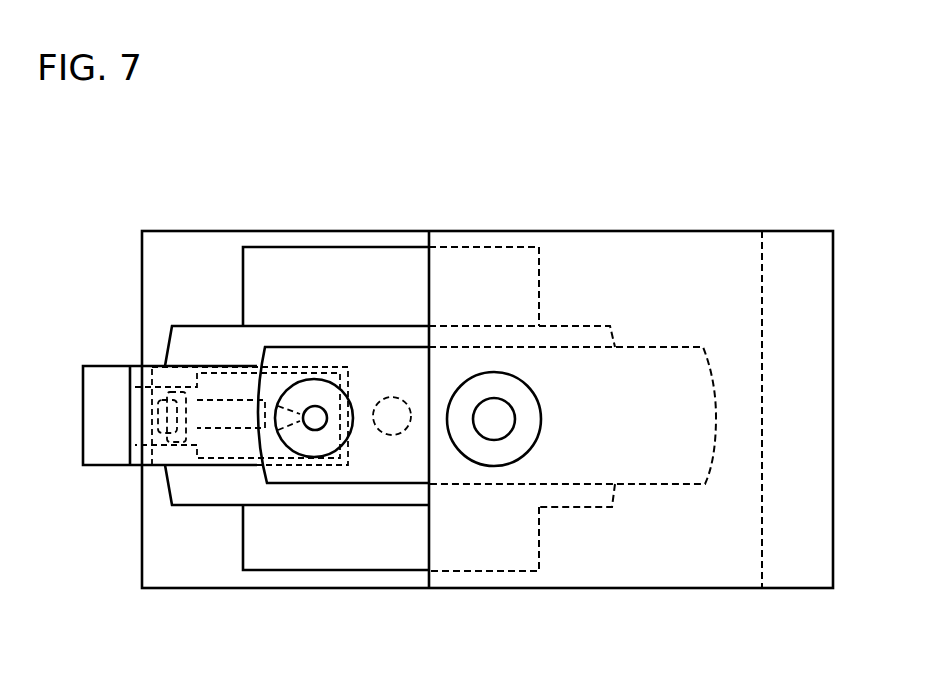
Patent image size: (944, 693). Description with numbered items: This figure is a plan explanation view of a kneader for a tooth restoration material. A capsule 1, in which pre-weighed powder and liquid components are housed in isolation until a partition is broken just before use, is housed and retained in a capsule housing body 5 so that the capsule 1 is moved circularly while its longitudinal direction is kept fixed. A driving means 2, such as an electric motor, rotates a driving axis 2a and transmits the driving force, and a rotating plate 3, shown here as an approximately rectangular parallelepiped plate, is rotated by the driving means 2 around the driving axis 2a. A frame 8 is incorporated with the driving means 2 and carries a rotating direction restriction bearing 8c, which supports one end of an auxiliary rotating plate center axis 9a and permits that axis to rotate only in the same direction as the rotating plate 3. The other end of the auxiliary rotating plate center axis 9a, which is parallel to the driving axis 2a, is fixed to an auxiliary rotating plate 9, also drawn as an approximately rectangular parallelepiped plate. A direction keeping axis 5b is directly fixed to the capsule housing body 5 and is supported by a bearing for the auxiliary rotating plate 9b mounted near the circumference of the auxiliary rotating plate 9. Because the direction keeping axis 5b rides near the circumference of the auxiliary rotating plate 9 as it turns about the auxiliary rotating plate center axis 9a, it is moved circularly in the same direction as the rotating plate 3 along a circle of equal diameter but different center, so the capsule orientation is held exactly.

The capsule for a tooth restoration material 1 is at (232, 413).
The driving means 2 is at (293, 548).
The driving axis 2a is at (390, 398).
The rotating plate 3 is at (215, 487).
The capsule housing body 5 is at (97, 425).
The direction keeping axis 5b is at (317, 417).
The frame 8 is at (650, 270).
The rotating direction restriction bearing 8c is at (527, 413).
The auxiliary rotating plate 9 is at (393, 460).
The auxiliary rotating plate center axis 9a is at (493, 417).
The bearing for the auxiliary rotating plate 9b is at (293, 402).